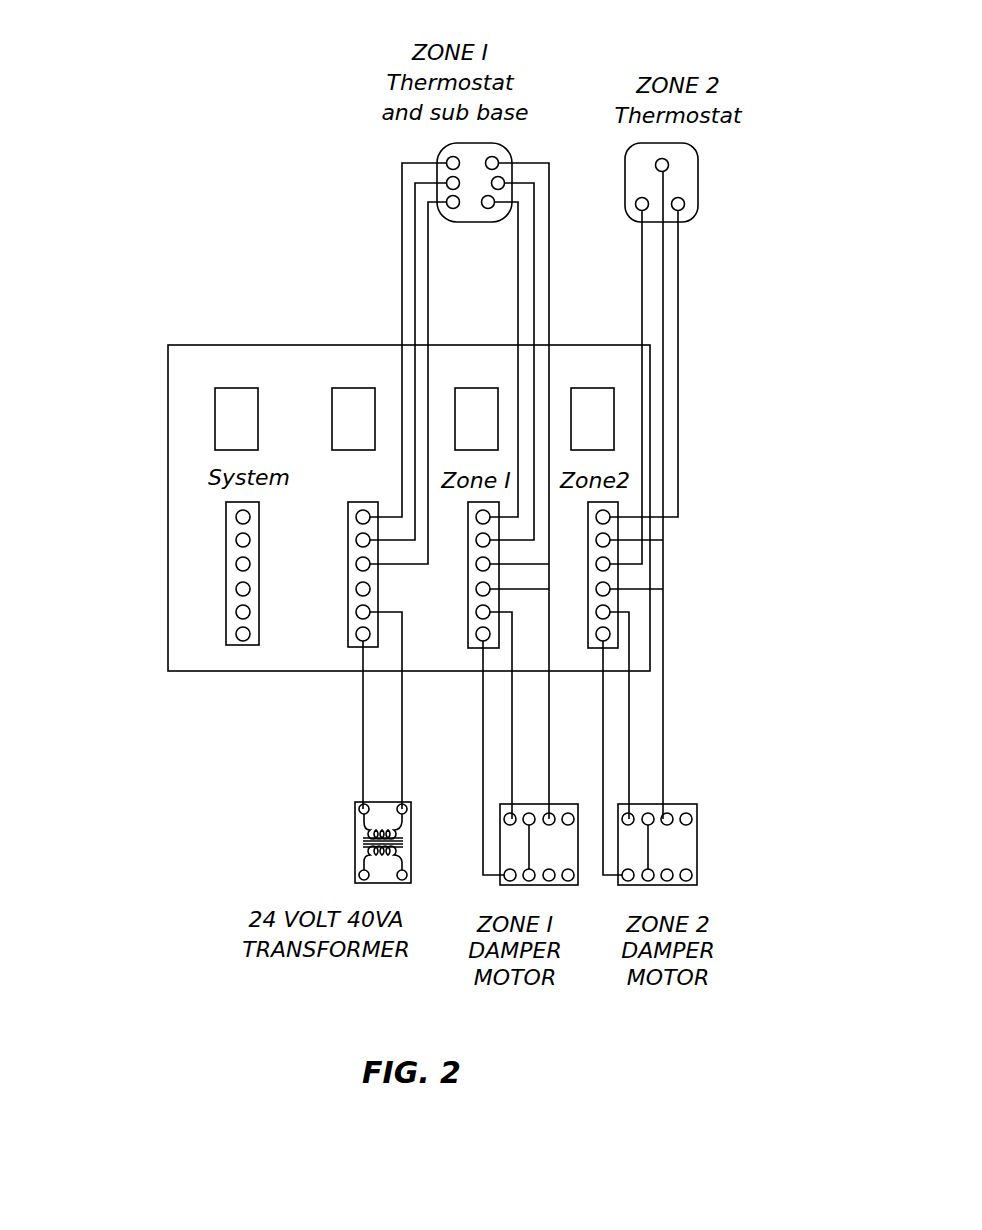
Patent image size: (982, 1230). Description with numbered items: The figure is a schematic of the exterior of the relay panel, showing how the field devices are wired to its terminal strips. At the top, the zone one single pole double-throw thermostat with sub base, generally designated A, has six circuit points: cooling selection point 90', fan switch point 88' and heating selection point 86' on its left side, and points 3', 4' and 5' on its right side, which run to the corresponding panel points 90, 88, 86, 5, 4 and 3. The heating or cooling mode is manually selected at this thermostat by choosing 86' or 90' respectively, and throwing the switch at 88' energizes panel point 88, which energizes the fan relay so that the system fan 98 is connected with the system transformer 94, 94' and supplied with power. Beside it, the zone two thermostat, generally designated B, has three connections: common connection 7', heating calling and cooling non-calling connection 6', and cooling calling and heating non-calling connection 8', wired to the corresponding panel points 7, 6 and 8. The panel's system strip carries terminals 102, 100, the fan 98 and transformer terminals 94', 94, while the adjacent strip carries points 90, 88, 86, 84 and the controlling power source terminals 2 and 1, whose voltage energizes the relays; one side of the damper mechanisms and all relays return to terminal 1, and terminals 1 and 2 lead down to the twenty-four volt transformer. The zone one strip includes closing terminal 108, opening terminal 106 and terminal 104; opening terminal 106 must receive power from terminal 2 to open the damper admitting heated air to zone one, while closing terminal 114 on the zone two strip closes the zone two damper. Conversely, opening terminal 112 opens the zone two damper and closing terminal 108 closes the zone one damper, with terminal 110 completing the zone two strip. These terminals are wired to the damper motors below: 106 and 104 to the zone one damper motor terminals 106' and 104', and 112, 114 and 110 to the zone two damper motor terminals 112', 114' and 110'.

The zone 1 SPDT thermostat A is at (370, 92).
The zone 2 SPDT thermostat B is at (752, 108).
The cooling selection circuit point 90' is at (403, 154).
The fan switch circuit point 88' is at (403, 178).
The heating selection circuit point 86' is at (403, 209).
The zone 1 thermostat circuit point 3' is at (520, 153).
The zone 1 thermostat circuit point 4' is at (533, 177).
The zone 1 thermostat circuit point 5' is at (497, 226).
The heating calling and cooling non-calling connection 6' is at (629, 228).
The common connection 7' is at (693, 159).
The cooling calling and heating non-calling connection 8' is at (701, 201).
The system terminal 102 is at (236, 517).
The system terminal 100 is at (236, 540).
The system fan 98 is at (236, 564).
The system transformer terminal 94' is at (213, 589).
The system transformer 94 is at (214, 612).
The cooling mode panel point 90 is at (337, 517).
The fan circuit point 88 is at (337, 540).
The heating mode panel point 86 is at (337, 564).
The relay panel terminal 84 is at (356, 589).
The controlling power source terminal 2 is at (356, 612).
The controlling power source terminal 1 is at (356, 634).
The zone 1 panel point 5 is at (466, 517).
The zone 1 panel point 4 is at (466, 540).
The zone 1 panel point 3 is at (466, 564).
The zone 1 closing terminal 108 is at (476, 589).
The zone 1 opening terminal 106 is at (454, 612).
The zone 1 damper terminal 104 is at (454, 634).
The zone 2 panel point 8 is at (588, 517).
The zone 2 panel point 7 is at (588, 540).
The zone 2 panel point 6 is at (588, 564).
The zone 2 closing terminal 114 is at (581, 589).
The zone 2 opening terminal 112 is at (581, 612).
The zone 2 damper terminal 110 is at (580, 648).
The zone 1 damper motor opening terminal 106' is at (473, 797).
The zone 1 damper motor terminal 104' is at (470, 888).
The zone 2 damper motor opening terminal 112' is at (600, 797).
The zone 2 damper motor closing terminal 114' is at (691, 797).
The zone 2 damper motor terminal 110' is at (607, 888).